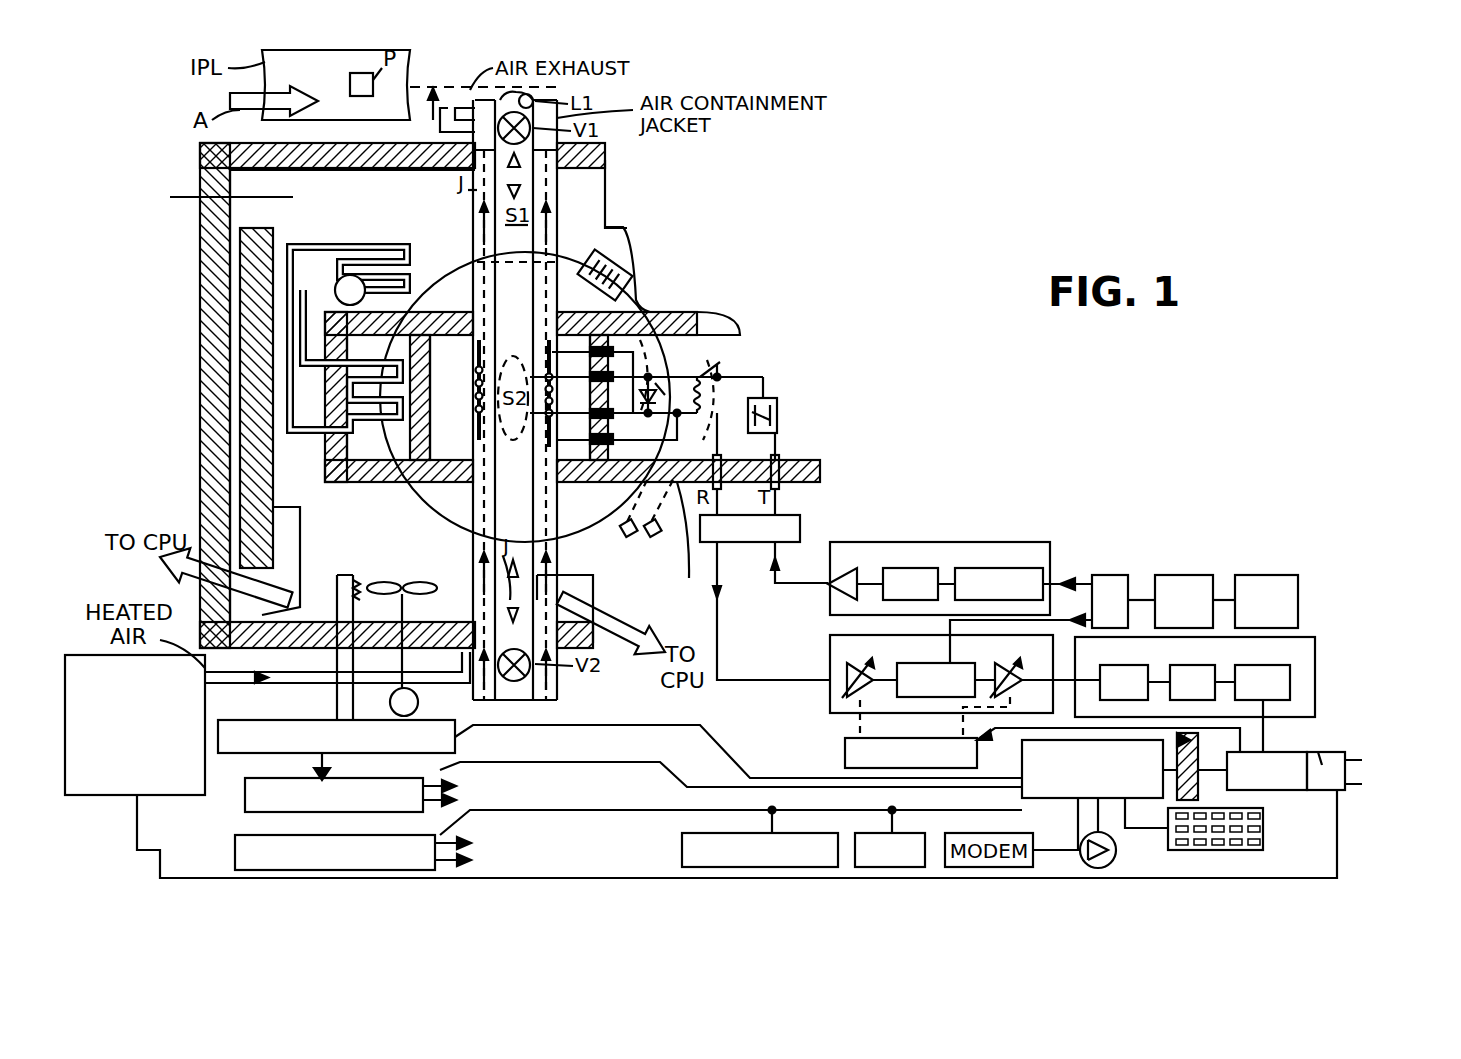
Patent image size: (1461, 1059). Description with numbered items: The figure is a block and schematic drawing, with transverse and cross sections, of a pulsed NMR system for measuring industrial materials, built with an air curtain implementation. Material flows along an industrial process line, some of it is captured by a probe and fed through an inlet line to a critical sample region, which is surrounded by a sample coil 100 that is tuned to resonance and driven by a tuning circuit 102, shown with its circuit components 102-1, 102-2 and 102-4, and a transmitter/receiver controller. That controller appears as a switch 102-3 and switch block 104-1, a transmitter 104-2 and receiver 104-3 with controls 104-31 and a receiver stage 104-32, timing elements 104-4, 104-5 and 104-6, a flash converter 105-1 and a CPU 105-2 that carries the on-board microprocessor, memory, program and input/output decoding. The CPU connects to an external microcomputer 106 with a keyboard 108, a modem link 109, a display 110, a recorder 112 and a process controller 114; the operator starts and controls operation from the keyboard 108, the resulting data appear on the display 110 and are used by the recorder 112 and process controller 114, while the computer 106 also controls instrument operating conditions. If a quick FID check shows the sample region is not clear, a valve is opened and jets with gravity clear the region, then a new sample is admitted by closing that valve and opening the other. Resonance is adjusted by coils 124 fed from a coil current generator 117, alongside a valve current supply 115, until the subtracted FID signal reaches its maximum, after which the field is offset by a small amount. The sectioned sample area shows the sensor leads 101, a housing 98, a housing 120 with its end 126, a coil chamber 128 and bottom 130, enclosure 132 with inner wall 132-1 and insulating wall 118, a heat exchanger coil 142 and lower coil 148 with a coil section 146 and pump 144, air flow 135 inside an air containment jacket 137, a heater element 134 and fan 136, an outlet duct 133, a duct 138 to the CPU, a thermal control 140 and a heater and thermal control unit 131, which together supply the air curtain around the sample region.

The air containment jacket housing 98 is at (527, 197).
The sample coil 100 is at (474, 386).
The sensor leads 101 is at (475, 352).
The tuning circuit 102 is at (697, 372).
The coil 102-1 is at (712, 348).
The switch contact 102-2 is at (708, 372).
The switch 102-3 is at (739, 581).
The capacitor network 102-4 is at (777, 410).
The switch block 104-1 is at (800, 529).
The transmitter 104-2 is at (830, 592).
The receiver 104-3 is at (830, 668).
The controls 104-31 is at (858, 712).
The receiver amplifier 104-32 is at (1014, 649).
The crystal oscillator 104-4 is at (1250, 575).
The pulse generator PPG 104-5 is at (1185, 575).
The phase shifter 104-6 is at (1105, 575).
The flash converter 105-1 is at (1317, 648).
The CPU 105-2 is at (1250, 790).
The external microcomputer 106 is at (1020, 800).
The keyboard 108 is at (1240, 852).
The modem link 109 is at (1020, 842).
The monitor 110 is at (1120, 833).
The recorder 112 is at (905, 832).
The process controller 114 is at (680, 850).
The valve current supply 115 is at (236, 843).
The coil current generator 117 is at (246, 802).
The inner insulating wall 118 is at (264, 383).
The sensor housing 120 is at (638, 303).
The coils 124 is at (627, 272).
The housing end 126 is at (702, 316).
The coil chamber 128 is at (390, 396).
The housing bottom 130 is at (405, 483).
The heater and thermal control 131 is at (125, 797).
The enclosure 132 is at (308, 148).
The enclosure inner wall 132-1 is at (264, 200).
The outlet duct 133 is at (540, 574).
The heater element 134 is at (360, 582).
The air flow 135 is at (452, 128).
The fan 136 is at (402, 585).
The air containment jacket 137 is at (530, 700).
The duct to CPU 138 is at (273, 517).
The thermal control 140 is at (246, 756).
The heat exchanger coil 142 is at (343, 242).
The pump 144 is at (336, 281).
The coil section 146 is at (404, 242).
The lower coil 148 is at (332, 446).